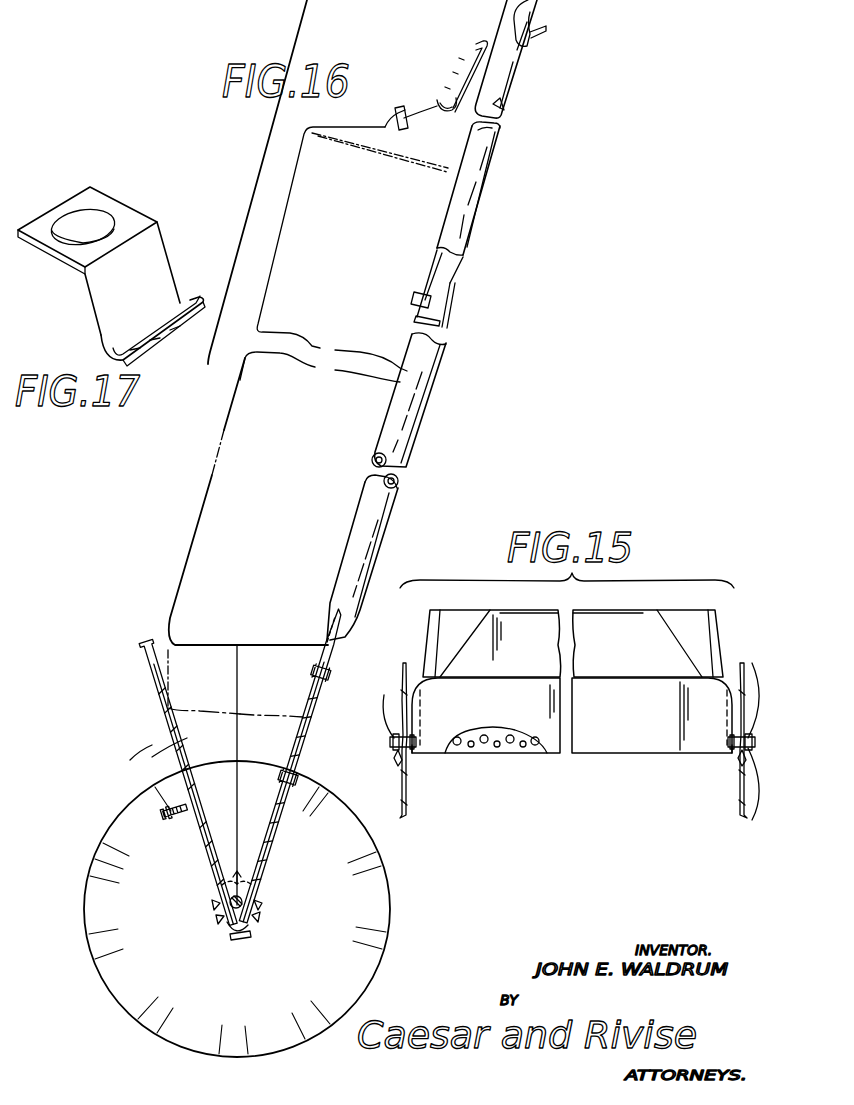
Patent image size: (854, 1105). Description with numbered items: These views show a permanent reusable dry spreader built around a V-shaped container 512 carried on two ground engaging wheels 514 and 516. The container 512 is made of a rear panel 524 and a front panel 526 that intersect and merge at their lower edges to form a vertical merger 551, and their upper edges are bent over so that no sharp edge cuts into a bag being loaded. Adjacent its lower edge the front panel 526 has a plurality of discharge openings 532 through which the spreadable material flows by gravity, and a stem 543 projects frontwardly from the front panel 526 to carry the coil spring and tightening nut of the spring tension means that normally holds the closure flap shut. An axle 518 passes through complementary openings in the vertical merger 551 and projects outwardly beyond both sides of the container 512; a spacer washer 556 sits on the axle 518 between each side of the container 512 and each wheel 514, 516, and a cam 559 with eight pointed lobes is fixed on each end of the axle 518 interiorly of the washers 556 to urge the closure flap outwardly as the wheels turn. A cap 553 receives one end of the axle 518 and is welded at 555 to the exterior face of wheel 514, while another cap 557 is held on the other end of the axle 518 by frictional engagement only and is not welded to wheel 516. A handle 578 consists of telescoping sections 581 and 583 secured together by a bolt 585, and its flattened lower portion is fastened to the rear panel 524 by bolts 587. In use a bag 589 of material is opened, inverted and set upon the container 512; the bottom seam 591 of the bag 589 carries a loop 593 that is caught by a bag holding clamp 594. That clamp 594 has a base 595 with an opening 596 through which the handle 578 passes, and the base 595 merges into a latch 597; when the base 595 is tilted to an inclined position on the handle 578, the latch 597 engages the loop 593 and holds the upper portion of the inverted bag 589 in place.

In FIG. 16, the V-shaped container 512 is at (185, 738).
In FIG. 15, the ground engaging wheel 514 is at (740, 813).
In FIG. 16, the ground engaging wheel 516 is at (381, 885).
In FIG. 15, the ground engaging wheel 516 is at (404, 816).
In FIG. 16, the axle 518 is at (243, 893).
In FIG. 15, the axle 518 is at (393, 742).
In FIG. 16, the rear panel 524 is at (277, 832).
In FIG. 16, the front panel 526 is at (170, 720).
In FIG. 15, the front panel 526 is at (652, 615).
In FIG. 15, the discharge openings 532 is at (572, 734).
In FIG. 16, the stem 543 is at (163, 812).
In FIG. 16, the vertical merger 551 is at (240, 772).
In FIG. 15, the cap 553 is at (745, 691).
In FIG. 15, the weld 555 is at (751, 800).
In FIG. 15, the spacer washer 556 is at (405, 752).
In FIG. 15, the cap 557 is at (384, 695).
In FIG. 15, the cam 559 is at (418, 753).
In FIG. 16, the handle 578 is at (482, 200).
In FIG. 16, the upper tube section 581 is at (509, 90).
In FIG. 16, the handle section 583 is at (418, 397).
In FIG. 16, the bolt 585 is at (420, 292).
In FIG. 16, the bolts 587 is at (318, 672).
In FIG. 16, the bag 589 is at (202, 522).
In FIG. 16, the bottom seam 591 is at (398, 118).
In FIG. 16, the loop 593 is at (440, 105).
In FIG. 17, the bag holding clamp 594 is at (128, 213).
In FIG. 16, the base 595 is at (546, 36).
In FIG. 17, the base 595 is at (93, 195).
In FIG. 17, the opening 596 is at (72, 213).
In FIG. 16, the latch 597 is at (462, 118).
In FIG. 17, the latch 597 is at (162, 275).